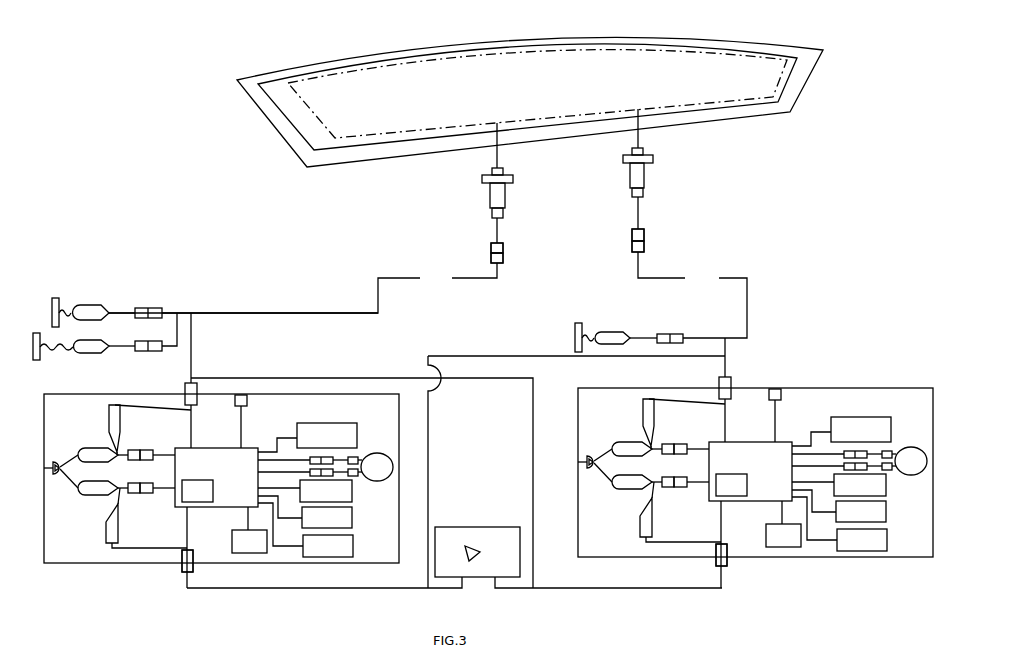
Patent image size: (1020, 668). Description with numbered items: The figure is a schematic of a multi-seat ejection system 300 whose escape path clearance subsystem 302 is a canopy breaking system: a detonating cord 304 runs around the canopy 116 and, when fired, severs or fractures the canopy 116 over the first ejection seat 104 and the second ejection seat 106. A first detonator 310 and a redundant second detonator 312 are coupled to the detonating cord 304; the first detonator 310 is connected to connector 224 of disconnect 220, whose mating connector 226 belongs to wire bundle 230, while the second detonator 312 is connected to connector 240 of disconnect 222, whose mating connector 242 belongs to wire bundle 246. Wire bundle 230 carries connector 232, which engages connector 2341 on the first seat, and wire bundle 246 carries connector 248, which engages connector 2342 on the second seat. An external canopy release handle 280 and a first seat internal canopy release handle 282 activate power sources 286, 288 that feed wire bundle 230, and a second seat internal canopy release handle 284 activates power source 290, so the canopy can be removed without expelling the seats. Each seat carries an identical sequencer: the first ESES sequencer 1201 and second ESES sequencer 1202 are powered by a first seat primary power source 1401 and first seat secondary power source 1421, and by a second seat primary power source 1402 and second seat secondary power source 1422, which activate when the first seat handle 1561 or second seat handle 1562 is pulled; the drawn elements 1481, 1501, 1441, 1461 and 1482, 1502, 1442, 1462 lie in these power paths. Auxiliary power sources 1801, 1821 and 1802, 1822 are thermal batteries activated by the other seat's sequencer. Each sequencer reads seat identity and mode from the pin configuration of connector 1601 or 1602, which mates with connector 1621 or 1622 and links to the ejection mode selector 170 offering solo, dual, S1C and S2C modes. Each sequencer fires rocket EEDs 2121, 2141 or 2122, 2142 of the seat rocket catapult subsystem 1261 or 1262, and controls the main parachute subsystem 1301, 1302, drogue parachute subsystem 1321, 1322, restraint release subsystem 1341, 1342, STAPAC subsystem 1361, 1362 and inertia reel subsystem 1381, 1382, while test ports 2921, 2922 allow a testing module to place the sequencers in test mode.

The multi-seat ejection system 300 is at (96, 66).
The escape path clearance subsystem 302 is at (833, 90).
The canopy 116 is at (276, 76).
The detonating cord 304 is at (716, 104).
The first detonator 310 is at (500, 203).
The second detonator 312 is at (645, 178).
The disconnect 220 is at (450, 226).
The connector 224 is at (491, 247).
The connector 226 is at (491, 258).
The disconnect 222 is at (705, 226).
The connector 240 is at (644, 236).
The connector 242 is at (644, 247).
The wire bundle 230 is at (303, 288).
The wire bundle 246 is at (692, 295).
The external canopy release handle 280 is at (36, 333).
The first seat internal canopy release handle 282 is at (55, 298).
The second seat internal canopy release handle 284 is at (578, 323).
The power source 286 is at (90, 353).
The power source 288 is at (90, 305).
The power source 290 is at (612, 333).
The connector 232 is at (183, 388).
The connector 248 is at (744, 379).
The ejection mode selector 170 is at (480, 527).
The first ejection seat 104 is at (386, 421).
The second ejection seat 106 is at (755, 472).
The connector 2341 is at (196, 406).
The connector 2342 is at (744, 420).
The first test port 2921 is at (248, 401).
The second test port 2922 is at (798, 415).
The first ESES sequencer 1201 is at (235, 477).
The second ESES sequencer 1202 is at (750, 471).
The first main parachute subsystem 1301 is at (343, 445).
The second main parachute subsystem 1302 is at (841, 431).
The first seat rocket catapult subsystem 1261 is at (392, 475).
The second seat rocket catapult subsystem 1262 is at (861, 461).
The first rocket EED 2121 is at (357, 457).
The first rocket EED 2122 is at (909, 440).
The second rocket EED 2141 is at (353, 478).
The second rocket EED 2142 is at (904, 486).
The first drogue parachute subsystem 1321 is at (342, 500).
The second drogue parachute subsystem 1322 is at (839, 485).
The first restraint release subsystem 1341 is at (343, 526).
The second restraint release subsystem 1342 is at (839, 506).
The first pitch stabilization package (STAPAC) subsystem 1361 is at (344, 555).
The second STAPAC subsystem 1362 is at (839, 524).
The first inertia reel subsystem 1381 is at (264, 550).
The second inertia reel subsystem 1382 is at (783, 524).
The connector 1621 is at (193, 557).
The connector 1622 is at (739, 544).
The connector 1601 is at (182, 575).
The connector 1602 is at (738, 569).
The first seat handle 1561 is at (50, 468).
The second seat handle 1562 is at (580, 463).
The first seat second auxiliary power source 1821 is at (109, 414).
The second seat second auxiliary power source 1822 is at (663, 420).
The first seat secondary power source 1421 is at (93, 448).
The second seat secondary power source 1422 is at (637, 436).
The relay 1481 is at (135, 450).
The relay 1482 is at (673, 434).
The relay 1501 is at (150, 450).
The relay 1502 is at (696, 434).
The first seat primary power source 1401 is at (93, 495).
The second seat primary power source 1402 is at (637, 498).
The relay 1441 is at (135, 493).
The relay 1442 is at (669, 502).
The relay 1461 is at (148, 493).
The relay 1462 is at (694, 502).
The first seat first auxiliary power source 1801 is at (106, 536).
The second seat first auxiliary power source 1802 is at (657, 514).